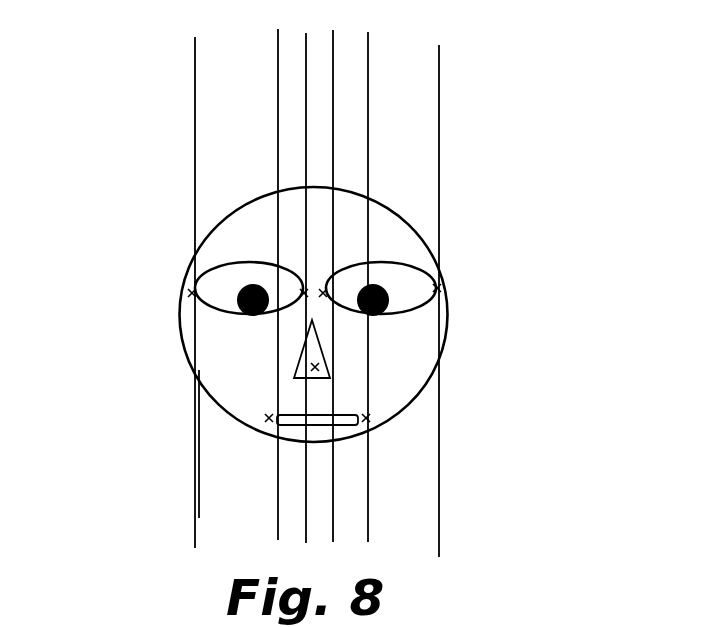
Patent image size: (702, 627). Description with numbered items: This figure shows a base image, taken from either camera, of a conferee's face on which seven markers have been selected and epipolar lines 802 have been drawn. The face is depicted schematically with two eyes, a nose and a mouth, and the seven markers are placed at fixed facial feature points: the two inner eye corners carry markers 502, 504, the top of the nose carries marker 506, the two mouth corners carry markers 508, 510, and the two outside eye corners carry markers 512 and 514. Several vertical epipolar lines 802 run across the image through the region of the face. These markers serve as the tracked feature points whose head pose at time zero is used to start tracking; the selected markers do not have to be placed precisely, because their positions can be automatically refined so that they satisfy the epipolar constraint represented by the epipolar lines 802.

The epipolar lines 802 is at (195, 75).
The marker 502 is at (304, 291).
The marker 504 is at (323, 291).
The marker 512 is at (192, 290).
The marker 514 is at (437, 286).
The marker 506 is at (317, 365).
The marker 508 is at (269, 416).
The marker 510 is at (368, 416).